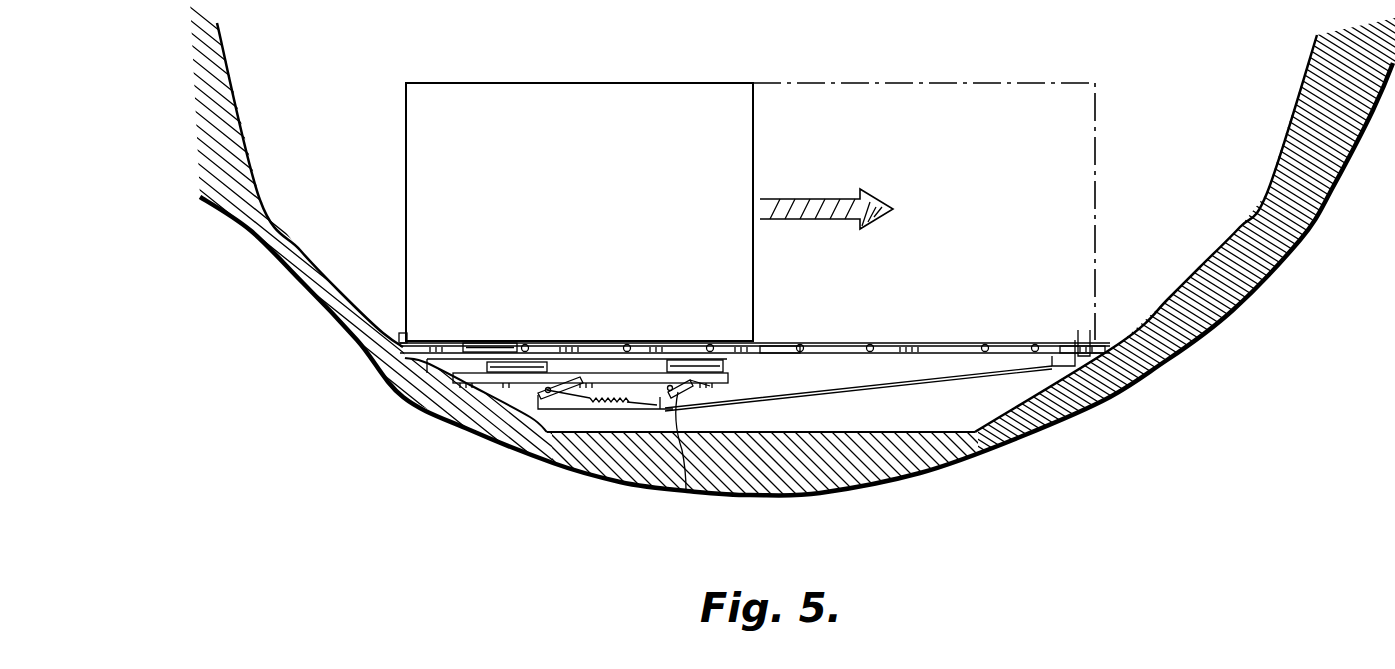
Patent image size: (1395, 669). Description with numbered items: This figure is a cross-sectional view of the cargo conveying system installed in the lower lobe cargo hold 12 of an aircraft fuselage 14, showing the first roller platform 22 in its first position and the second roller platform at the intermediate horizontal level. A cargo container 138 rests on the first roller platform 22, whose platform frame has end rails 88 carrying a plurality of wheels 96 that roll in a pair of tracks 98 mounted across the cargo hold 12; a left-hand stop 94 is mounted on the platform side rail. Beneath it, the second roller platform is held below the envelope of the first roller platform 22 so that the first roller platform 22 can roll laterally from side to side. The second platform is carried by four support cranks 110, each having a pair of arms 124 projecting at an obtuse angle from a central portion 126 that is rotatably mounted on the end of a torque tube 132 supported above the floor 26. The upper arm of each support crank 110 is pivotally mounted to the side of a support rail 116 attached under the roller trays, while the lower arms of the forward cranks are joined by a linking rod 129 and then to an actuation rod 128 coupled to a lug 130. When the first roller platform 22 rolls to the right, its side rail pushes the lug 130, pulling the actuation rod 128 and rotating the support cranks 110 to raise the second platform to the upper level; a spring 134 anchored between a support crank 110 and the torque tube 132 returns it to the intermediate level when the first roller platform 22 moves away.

The lower lobe cargo hold 12 is at (347, 190).
The aircraft fuselage 14 is at (1240, 292).
The first roller platform 22 is at (464, 332).
The floor 26 is at (922, 428).
The end rails 88 is at (692, 344).
The left-hand stop 94 is at (400, 343).
The wheels 96 is at (640, 343).
The tracks 98 is at (770, 345).
The support cranks 110 is at (663, 401).
The support rails 116 is at (730, 376).
The arms 124 is at (697, 388).
The central portion 126 is at (690, 492).
The actuation rod 128 is at (893, 385).
The linking rod 129 is at (613, 405).
The lug 130 is at (1078, 342).
The torque tubes 132 is at (542, 394).
The spring 134 is at (600, 402).
The cargo container 138 is at (595, 222).